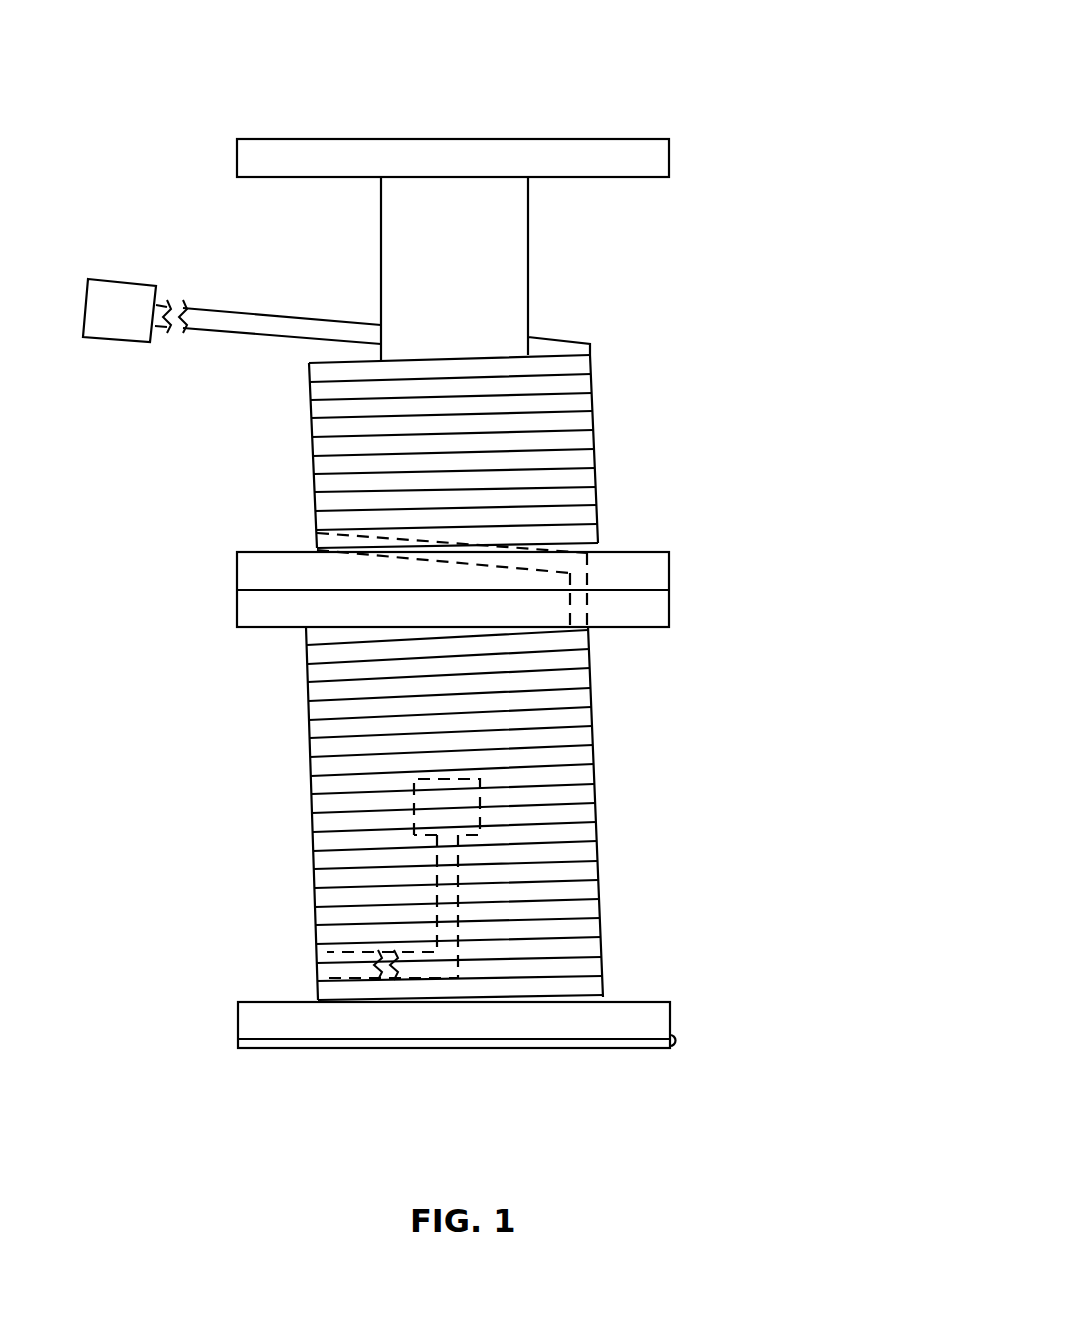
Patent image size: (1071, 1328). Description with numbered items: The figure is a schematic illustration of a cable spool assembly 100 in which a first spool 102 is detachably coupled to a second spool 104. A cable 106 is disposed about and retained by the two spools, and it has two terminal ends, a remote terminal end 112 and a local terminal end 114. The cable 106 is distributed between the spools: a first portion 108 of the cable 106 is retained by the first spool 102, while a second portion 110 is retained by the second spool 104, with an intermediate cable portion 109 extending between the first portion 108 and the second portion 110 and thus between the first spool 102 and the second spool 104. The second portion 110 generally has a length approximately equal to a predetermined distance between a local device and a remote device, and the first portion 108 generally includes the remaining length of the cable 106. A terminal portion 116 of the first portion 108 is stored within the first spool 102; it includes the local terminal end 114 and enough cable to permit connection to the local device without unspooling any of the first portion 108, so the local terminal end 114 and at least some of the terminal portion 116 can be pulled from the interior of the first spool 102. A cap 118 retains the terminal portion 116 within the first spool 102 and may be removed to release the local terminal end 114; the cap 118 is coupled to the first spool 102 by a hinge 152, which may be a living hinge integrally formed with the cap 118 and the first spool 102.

The cable spool assembly 100 is at (664, 57).
The first spool 102 is at (740, 686).
The second spool 104 is at (692, 304).
The cable 106 is at (322, 748).
The first portion 108 is at (683, 632).
The intermediate cable portion 109 is at (315, 540).
The second portion 110 is at (668, 347).
The remote terminal end 112 is at (120, 290).
The local terminal end 114 is at (432, 803).
The terminal portion 116 is at (437, 933).
The cap 118 is at (343, 1040).
The hinge 152 is at (675, 1034).